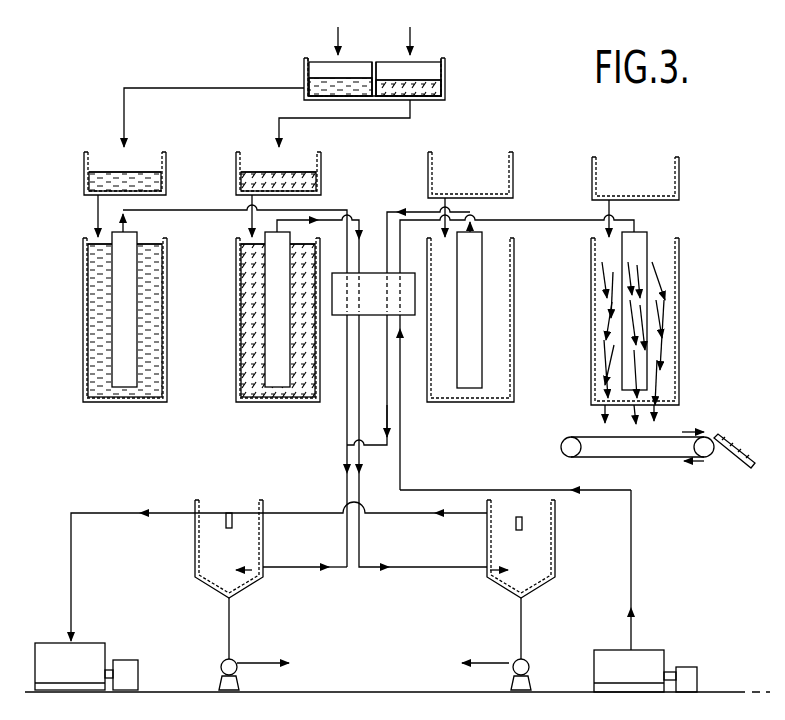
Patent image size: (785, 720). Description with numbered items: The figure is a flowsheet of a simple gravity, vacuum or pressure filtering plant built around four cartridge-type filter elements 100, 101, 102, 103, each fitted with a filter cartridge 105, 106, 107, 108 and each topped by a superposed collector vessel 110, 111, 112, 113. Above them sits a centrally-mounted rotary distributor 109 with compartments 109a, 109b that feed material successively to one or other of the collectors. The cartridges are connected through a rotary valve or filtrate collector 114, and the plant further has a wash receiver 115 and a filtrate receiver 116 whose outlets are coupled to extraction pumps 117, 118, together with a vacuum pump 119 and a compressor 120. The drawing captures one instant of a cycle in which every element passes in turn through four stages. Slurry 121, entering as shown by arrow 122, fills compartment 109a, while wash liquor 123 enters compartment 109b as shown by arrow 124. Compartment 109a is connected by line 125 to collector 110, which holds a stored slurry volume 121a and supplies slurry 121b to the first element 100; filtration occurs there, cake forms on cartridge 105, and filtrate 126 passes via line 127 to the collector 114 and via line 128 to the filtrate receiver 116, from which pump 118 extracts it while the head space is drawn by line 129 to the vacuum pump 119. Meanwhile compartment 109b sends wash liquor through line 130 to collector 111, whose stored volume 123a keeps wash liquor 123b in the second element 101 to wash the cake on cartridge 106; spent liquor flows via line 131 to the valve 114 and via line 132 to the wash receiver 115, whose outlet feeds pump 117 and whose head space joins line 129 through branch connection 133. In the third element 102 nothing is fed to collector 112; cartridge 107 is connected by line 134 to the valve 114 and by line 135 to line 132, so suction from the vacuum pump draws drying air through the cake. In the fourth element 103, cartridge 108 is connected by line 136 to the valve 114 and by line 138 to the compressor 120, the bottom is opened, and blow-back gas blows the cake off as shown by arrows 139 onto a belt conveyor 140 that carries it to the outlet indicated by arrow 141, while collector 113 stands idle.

The first filter element 100 is at (83, 257).
The second filter element 101 is at (236, 260).
The third filter element 102 is at (514, 258).
The fourth filter element 103 is at (679, 262).
The filter cartridge 105 is at (119, 298).
The filter cartridge 106 is at (277, 297).
The filter cartridge 107 is at (470, 310).
The filter cartridge 108 is at (647, 322).
The rotary distributor 109 is at (450, 76).
The compartment 109a is at (304, 62).
The compartment 109b is at (446, 61).
The collector vessel 110 is at (84, 152).
The collector vessel 111 is at (236, 152).
The collector vessel 112 is at (448, 138).
The collector vessel 113 is at (592, 158).
The rotary valve 114 is at (375, 307).
The wash receiver 115 is at (195, 547).
The filtrate receiver 116 is at (537, 540).
The extraction pump 117 is at (216, 676).
The extraction pump 118 is at (527, 672).
The vacuum pump 119 is at (105, 608).
The compressor 120 is at (647, 650).
The slurry 121 is at (304, 93).
The slurry storage volume 121a is at (85, 178).
The slurry in filter element 121b is at (100, 330).
The slurry inlet arrow 122 is at (337, 27).
The wash liquor 123 is at (445, 98).
The stored wash liquor volume 123a is at (321, 172).
The wash liquor in filter element 123b is at (250, 330).
The wash liquor inlet arrow 124 is at (410, 27).
The line 125 is at (199, 87).
The filtrate 126 is at (140, 234).
The line 127 is at (213, 210).
The line 128 is at (362, 542).
The line 129 is at (97, 512).
The line 130 is at (334, 124).
The line 131 is at (360, 212).
The line 132 is at (320, 567).
The branch connection 133 is at (224, 514).
The line 134 is at (410, 212).
The line 135 is at (387, 421).
The line 136 is at (530, 220).
The line 138 is at (520, 488).
The blow-off arrows 139 is at (620, 380).
The belt conveyor 140 is at (583, 437).
The outlet arrow 141 is at (745, 455).